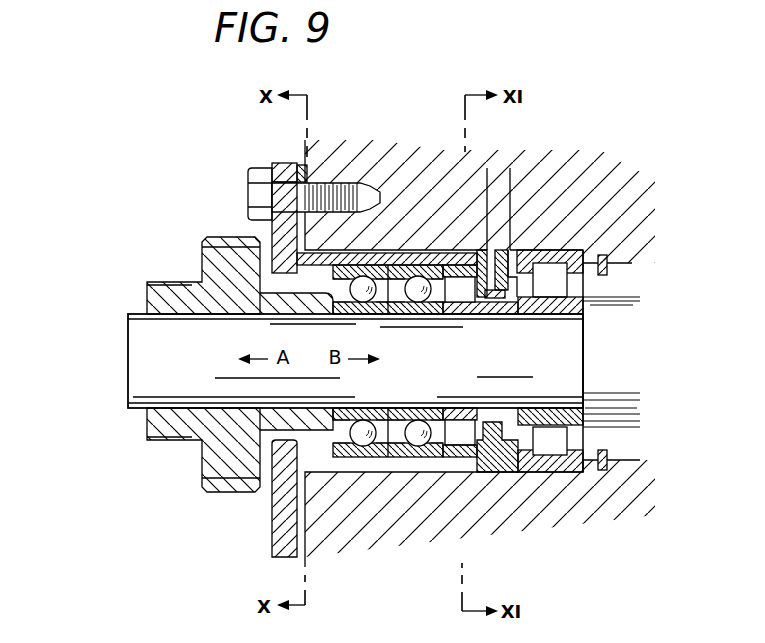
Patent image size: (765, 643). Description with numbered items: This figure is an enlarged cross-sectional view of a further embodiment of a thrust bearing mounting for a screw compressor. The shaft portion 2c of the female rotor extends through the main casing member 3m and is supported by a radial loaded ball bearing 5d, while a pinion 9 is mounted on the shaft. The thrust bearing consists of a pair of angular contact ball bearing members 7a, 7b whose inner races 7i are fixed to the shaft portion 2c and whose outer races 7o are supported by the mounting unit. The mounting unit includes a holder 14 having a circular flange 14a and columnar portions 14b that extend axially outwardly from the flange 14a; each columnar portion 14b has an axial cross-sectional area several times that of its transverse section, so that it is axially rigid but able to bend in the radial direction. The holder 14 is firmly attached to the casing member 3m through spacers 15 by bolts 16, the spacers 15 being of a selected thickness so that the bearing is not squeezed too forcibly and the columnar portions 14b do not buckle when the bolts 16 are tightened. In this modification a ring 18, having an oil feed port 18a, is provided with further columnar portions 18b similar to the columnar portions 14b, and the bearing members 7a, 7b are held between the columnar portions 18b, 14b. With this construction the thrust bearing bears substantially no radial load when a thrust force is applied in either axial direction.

The shaft portion 2c is at (130, 388).
The main casing member 3m is at (507, 515).
The radial loaded ball bearing 5d is at (560, 467).
The angular contact ball bearing member 7a is at (425, 455).
The angular contact ball bearing member 7b is at (368, 455).
The inner race 7i is at (428, 420).
The outer race 7o is at (395, 265).
The pinion 9 is at (202, 470).
The holder 14 is at (283, 160).
The circular flange 14a is at (277, 235).
The columnar portion 14b is at (262, 293).
The spacer 15 is at (308, 168).
The bolt 16 is at (250, 192).
The ring 18 is at (477, 251).
The oil feed port 18a is at (507, 300).
The columnar portion 18b is at (407, 266).